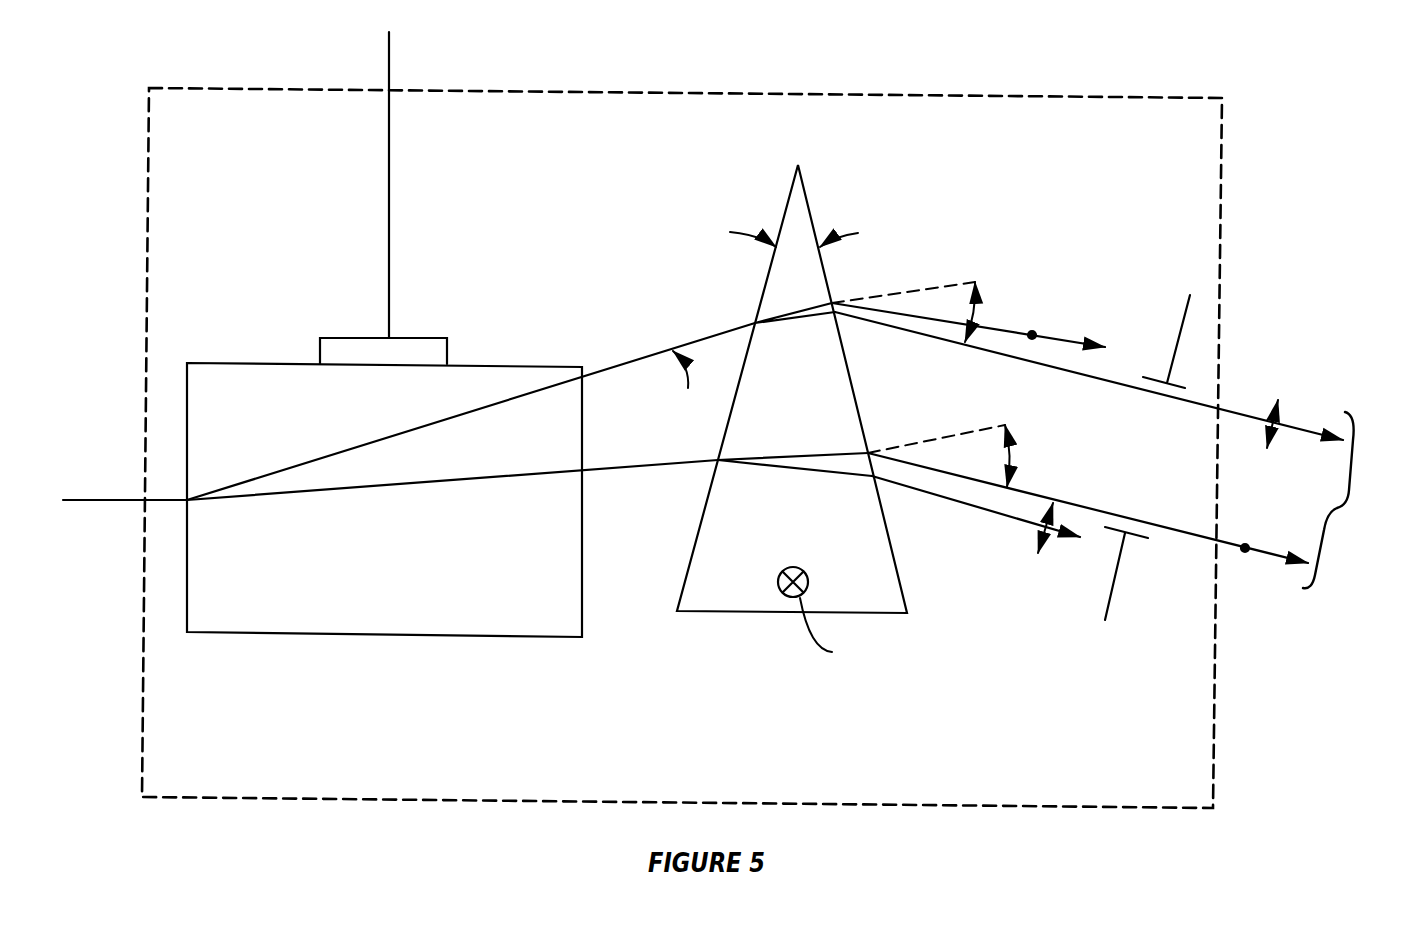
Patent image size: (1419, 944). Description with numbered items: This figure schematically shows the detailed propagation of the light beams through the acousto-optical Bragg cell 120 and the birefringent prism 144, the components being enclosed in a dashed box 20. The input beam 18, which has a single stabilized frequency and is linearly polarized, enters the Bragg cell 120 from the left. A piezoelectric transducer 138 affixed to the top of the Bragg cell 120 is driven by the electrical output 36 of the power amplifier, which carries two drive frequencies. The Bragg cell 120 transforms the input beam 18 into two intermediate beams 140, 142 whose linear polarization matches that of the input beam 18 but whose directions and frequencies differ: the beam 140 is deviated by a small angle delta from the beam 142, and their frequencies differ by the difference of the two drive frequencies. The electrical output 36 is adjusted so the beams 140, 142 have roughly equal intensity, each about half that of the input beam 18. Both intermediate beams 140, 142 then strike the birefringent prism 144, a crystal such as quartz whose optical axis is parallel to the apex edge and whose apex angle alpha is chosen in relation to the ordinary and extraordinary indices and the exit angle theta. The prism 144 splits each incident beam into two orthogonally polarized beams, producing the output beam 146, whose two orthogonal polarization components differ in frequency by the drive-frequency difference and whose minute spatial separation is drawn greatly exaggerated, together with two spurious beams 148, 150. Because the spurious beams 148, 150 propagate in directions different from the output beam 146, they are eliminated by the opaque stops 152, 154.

The input beam 18 is at (122, 503).
The optical channel (dashed enclosure) 20 is at (1077, 92).
The electrical output 36 is at (389, 66).
The acousto-optical Bragg cell 120 is at (324, 634).
The piezoelectric transducer 138 is at (401, 338).
The intermediate beam 140 is at (233, 485).
The intermediate beam 142 is at (492, 480).
The birefringent prism 144 is at (803, 188).
The output beam 146 is at (1119, 450).
The spurious beam 148 is at (1002, 330).
The spurious beam 150 is at (940, 497).
The opaque stop 152 is at (1183, 318).
The opaque stop 154 is at (1115, 585).